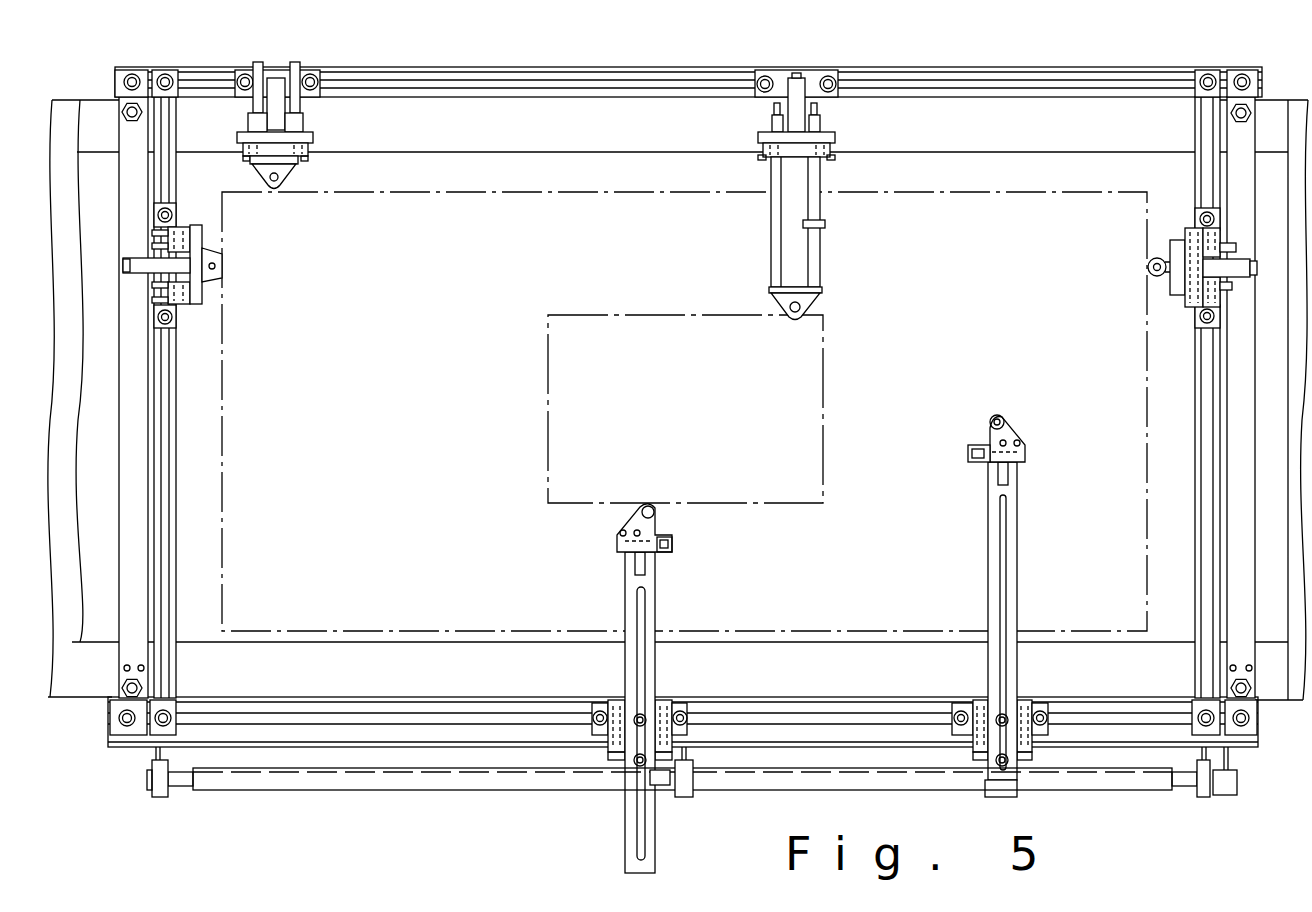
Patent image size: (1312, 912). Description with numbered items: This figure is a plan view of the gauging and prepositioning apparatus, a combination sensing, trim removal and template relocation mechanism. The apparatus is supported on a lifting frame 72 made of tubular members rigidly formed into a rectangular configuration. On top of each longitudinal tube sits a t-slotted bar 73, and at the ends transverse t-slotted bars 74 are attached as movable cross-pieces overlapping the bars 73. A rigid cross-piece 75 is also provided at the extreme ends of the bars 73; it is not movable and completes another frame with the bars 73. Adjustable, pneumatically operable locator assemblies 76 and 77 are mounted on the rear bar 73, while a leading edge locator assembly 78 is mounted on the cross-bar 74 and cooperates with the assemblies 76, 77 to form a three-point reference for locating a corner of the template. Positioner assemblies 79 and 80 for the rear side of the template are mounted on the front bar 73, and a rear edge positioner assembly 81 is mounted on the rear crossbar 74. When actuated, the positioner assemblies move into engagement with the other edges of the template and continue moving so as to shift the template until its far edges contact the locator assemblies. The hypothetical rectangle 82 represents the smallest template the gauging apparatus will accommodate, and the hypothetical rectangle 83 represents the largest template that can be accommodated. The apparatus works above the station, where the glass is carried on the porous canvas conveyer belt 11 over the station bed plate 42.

The porous canvas conveyer belt 11 is at (93, 643).
The station bed plate 42 is at (72, 700).
The lifting frame 72 is at (228, 22).
The t-slotted bar 73 is at (507, 28).
The transverse t-slotted bar 74 is at (170, 413).
The rigid cross-piece 75 is at (127, 532).
The locator assembly 76 is at (977, 558).
The locator assembly 77 is at (613, 602).
The leading edge locator assembly 78 is at (1167, 302).
The positioner assembly 79 is at (759, 249).
The positioner assembly 80 is at (319, 128).
The side roller unit 81 is at (206, 315).
The hypothetical rectangle 82 is at (763, 504).
The hypothetical rectangle 83 is at (222, 483).